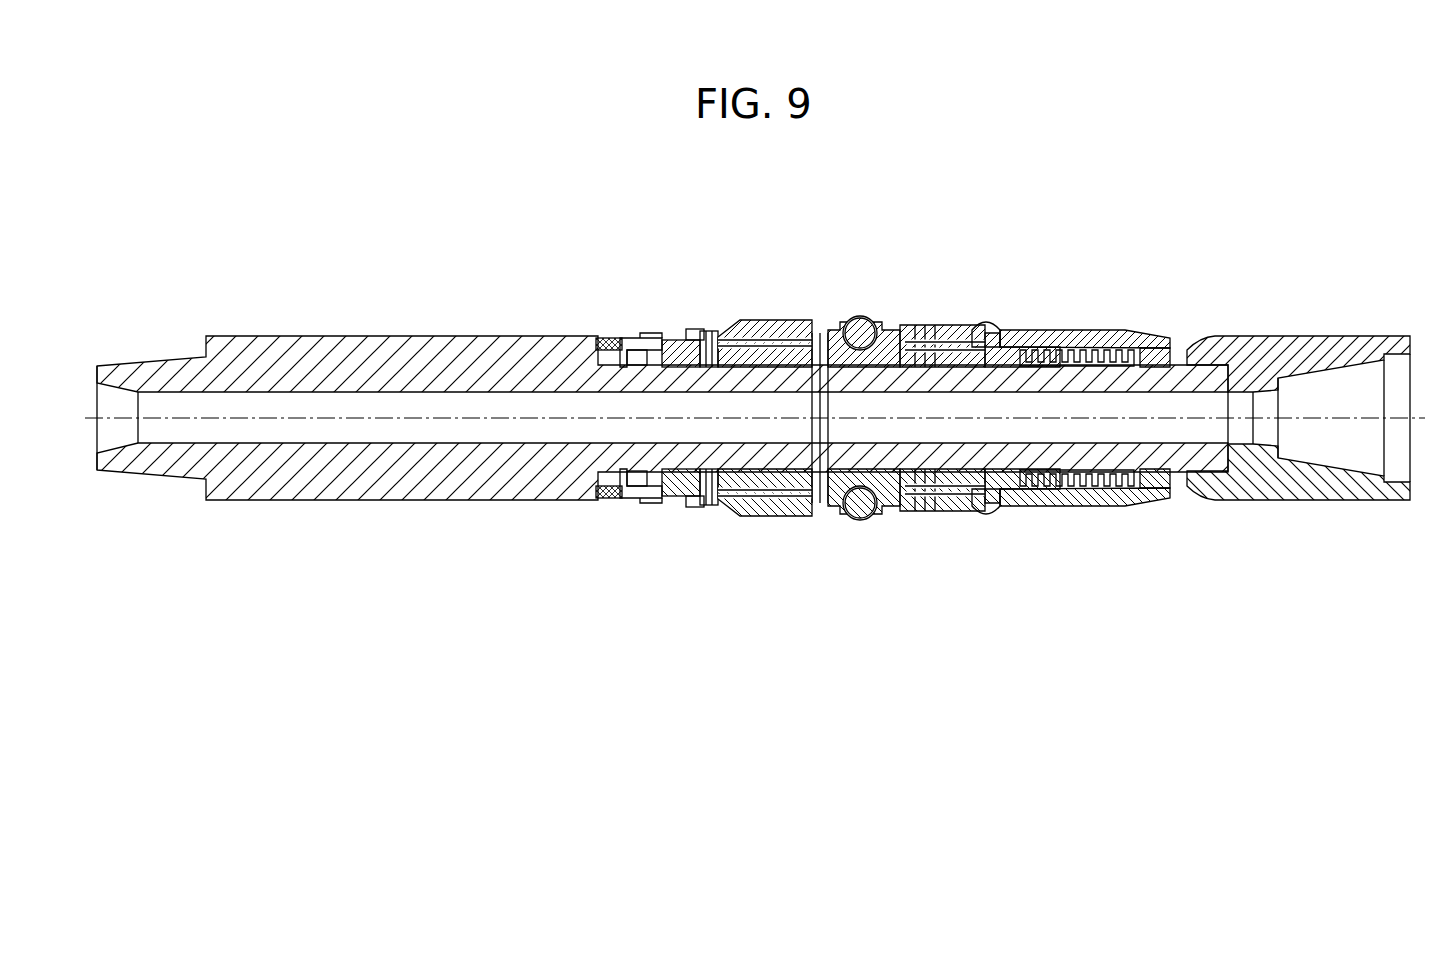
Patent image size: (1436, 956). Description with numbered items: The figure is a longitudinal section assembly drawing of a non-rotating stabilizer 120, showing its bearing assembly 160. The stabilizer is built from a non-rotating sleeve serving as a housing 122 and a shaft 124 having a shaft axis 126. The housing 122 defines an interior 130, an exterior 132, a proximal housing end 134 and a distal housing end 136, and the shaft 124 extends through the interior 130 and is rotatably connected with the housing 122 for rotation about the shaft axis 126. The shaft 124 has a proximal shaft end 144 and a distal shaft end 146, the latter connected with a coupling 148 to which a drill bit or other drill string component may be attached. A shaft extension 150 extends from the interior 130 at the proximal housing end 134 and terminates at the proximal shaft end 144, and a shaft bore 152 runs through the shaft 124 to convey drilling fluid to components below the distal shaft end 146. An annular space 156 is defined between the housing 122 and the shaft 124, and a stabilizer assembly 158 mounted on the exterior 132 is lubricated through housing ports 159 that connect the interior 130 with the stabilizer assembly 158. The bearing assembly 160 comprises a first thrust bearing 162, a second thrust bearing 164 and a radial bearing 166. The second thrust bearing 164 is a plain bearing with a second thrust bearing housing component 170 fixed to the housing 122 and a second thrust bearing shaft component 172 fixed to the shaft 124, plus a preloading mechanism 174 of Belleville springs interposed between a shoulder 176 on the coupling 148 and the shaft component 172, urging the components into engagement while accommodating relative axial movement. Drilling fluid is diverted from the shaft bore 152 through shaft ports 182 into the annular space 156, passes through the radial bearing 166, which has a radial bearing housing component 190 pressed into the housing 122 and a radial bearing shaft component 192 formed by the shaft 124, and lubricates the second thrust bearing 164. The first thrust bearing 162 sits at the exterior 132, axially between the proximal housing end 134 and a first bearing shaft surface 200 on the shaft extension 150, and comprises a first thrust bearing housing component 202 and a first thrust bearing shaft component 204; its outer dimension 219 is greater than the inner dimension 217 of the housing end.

The non-rotating stabilizer 120 is at (524, 214).
The housing 122 is at (1065, 340).
The shaft 124 is at (330, 340).
The shaft axis 126 is at (1340, 423).
The interior of the housing 130 is at (985, 515).
The exterior of the housing 132 is at (937, 515).
The proximal housing end 134 is at (650, 345).
The distal housing end 136 is at (1190, 345).
The proximal shaft end 144 is at (104, 362).
The distal shaft end 146 is at (1232, 480).
The coupling 148 is at (1347, 345).
The shaft extension 150 is at (440, 340).
The shaft bore 152 is at (366, 420).
The annular space 156 is at (985, 500).
The stabilizer assembly 158 is at (822, 520).
The housing ports 159 is at (712, 332).
The bearing assembly 160 is at (840, 237).
The first thrust bearing 162 is at (671, 593).
The second thrust bearing 164 is at (1058, 515).
The radial bearing 166 is at (910, 515).
The second thrust bearing housing component 170 is at (1015, 340).
The second thrust bearing shaft component 172 is at (1035, 345).
The preloading mechanism 174 is at (1105, 338).
The shoulder 176 is at (1140, 505).
The shaft ports 182 is at (815, 333).
The radial bearing housing component 190 is at (972, 340).
The radial bearing shaft component 192 is at (741, 515).
The first bearing shaft surface 200 is at (621, 497).
The first thrust bearing housing component 202 is at (664, 498).
The first thrust bearing shaft component 204 is at (633, 500).
The inner dimension 217 is at (634, 340).
The outer dimension 219 is at (676, 335).